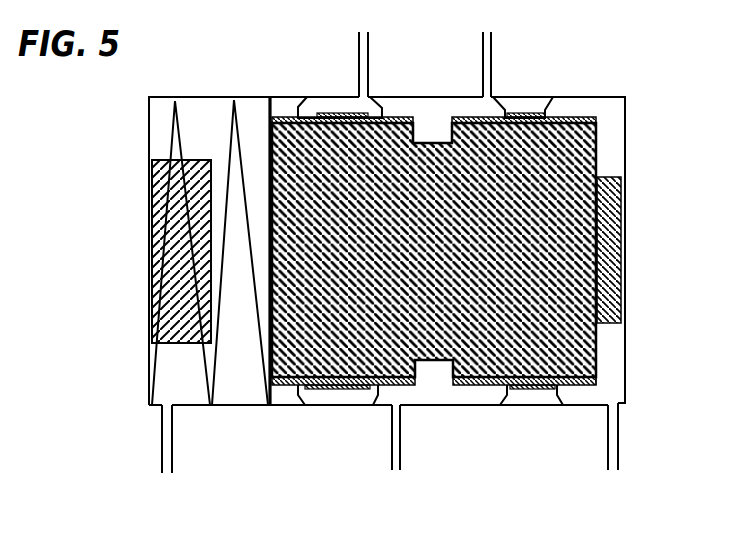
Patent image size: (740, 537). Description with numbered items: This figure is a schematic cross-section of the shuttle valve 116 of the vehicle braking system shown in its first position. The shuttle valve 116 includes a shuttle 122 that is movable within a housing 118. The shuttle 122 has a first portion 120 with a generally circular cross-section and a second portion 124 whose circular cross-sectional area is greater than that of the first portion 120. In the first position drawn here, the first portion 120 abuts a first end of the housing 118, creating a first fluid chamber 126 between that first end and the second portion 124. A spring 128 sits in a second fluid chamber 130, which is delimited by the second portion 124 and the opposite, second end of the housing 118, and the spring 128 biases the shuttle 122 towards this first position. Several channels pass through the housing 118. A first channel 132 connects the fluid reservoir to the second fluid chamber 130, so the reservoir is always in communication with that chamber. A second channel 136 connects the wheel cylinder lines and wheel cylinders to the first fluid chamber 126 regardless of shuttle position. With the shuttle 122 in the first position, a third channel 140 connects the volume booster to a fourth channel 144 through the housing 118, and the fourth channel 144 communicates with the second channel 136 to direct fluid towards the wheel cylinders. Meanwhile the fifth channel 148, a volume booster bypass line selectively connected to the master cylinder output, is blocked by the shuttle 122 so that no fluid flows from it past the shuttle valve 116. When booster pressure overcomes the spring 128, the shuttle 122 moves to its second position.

The shuttle valve 116 is at (365, 264).
The housing 118 is at (603, 97).
The first portion 120 is at (609, 258).
The shuttle 122 is at (403, 111).
The second portion 124 is at (485, 358).
The first fluid chamber 126 is at (612, 367).
The spring 128 is at (170, 137).
The second fluid chamber 130 is at (230, 382).
The first channel 132 is at (160, 436).
The second channel 136 is at (621, 450).
The third channel 140 is at (492, 70).
The fourth channel 144 is at (401, 452).
The fifth channel 148 is at (358, 57).